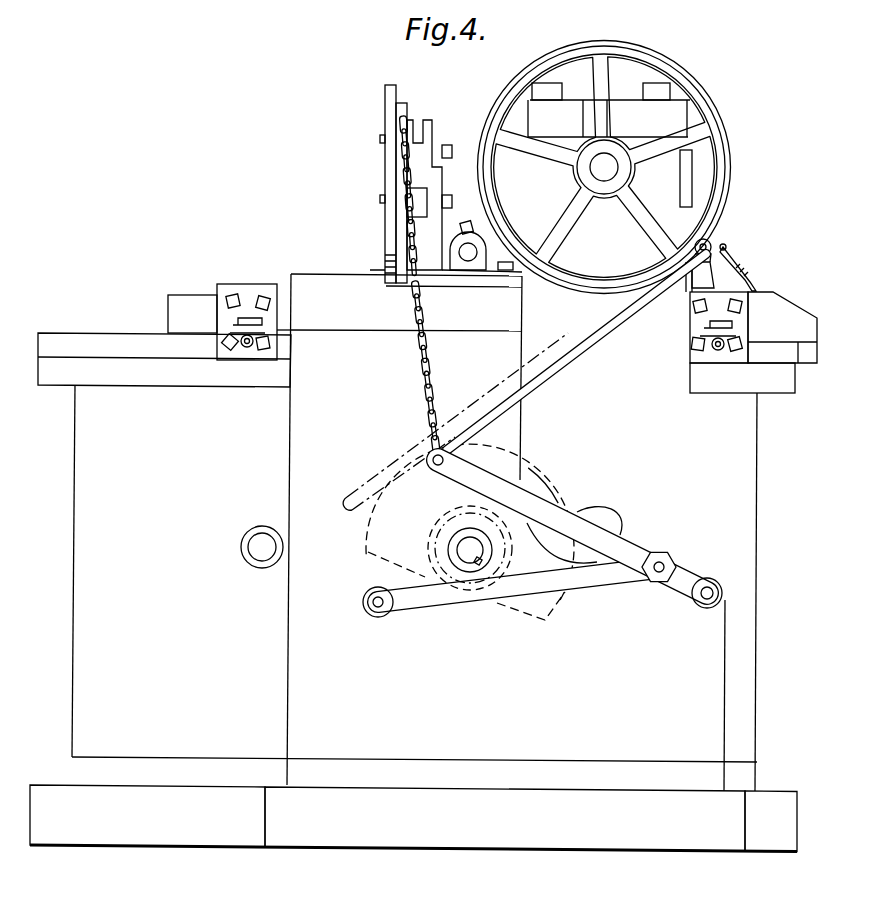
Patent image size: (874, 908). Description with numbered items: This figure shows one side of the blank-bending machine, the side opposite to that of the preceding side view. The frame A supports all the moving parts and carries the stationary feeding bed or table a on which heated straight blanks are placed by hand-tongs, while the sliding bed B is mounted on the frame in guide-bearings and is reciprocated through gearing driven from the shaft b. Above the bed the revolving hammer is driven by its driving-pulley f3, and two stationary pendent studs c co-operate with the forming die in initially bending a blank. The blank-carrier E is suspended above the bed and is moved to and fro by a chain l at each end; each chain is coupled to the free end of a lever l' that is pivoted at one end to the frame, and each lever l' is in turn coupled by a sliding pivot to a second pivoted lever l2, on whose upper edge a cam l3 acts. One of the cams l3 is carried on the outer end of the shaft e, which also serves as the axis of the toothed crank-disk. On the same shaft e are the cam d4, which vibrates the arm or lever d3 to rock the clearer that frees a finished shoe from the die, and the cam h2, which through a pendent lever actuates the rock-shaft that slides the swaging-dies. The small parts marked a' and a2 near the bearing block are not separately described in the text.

The frame A is at (413, 557).
The sliding bed B is at (492, 323).
The feeding bed or table a is at (551, 267).
The pivot a' is at (720, 235).
The block a2 is at (704, 271).
The blank-carrier E is at (446, 184).
The chain l is at (419, 284).
The stationary pendent stud c is at (610, 144).
The driving-pulley f3 is at (604, 167).
The cam d4 is at (538, 478).
The cam h2 is at (574, 530).
The arm or lever d3 is at (576, 352).
The second pivoted lever l2 is at (510, 592).
The cam l3 is at (494, 553).
The shaft e is at (470, 551).
The lever l' is at (577, 531).
The shaft b is at (262, 547).